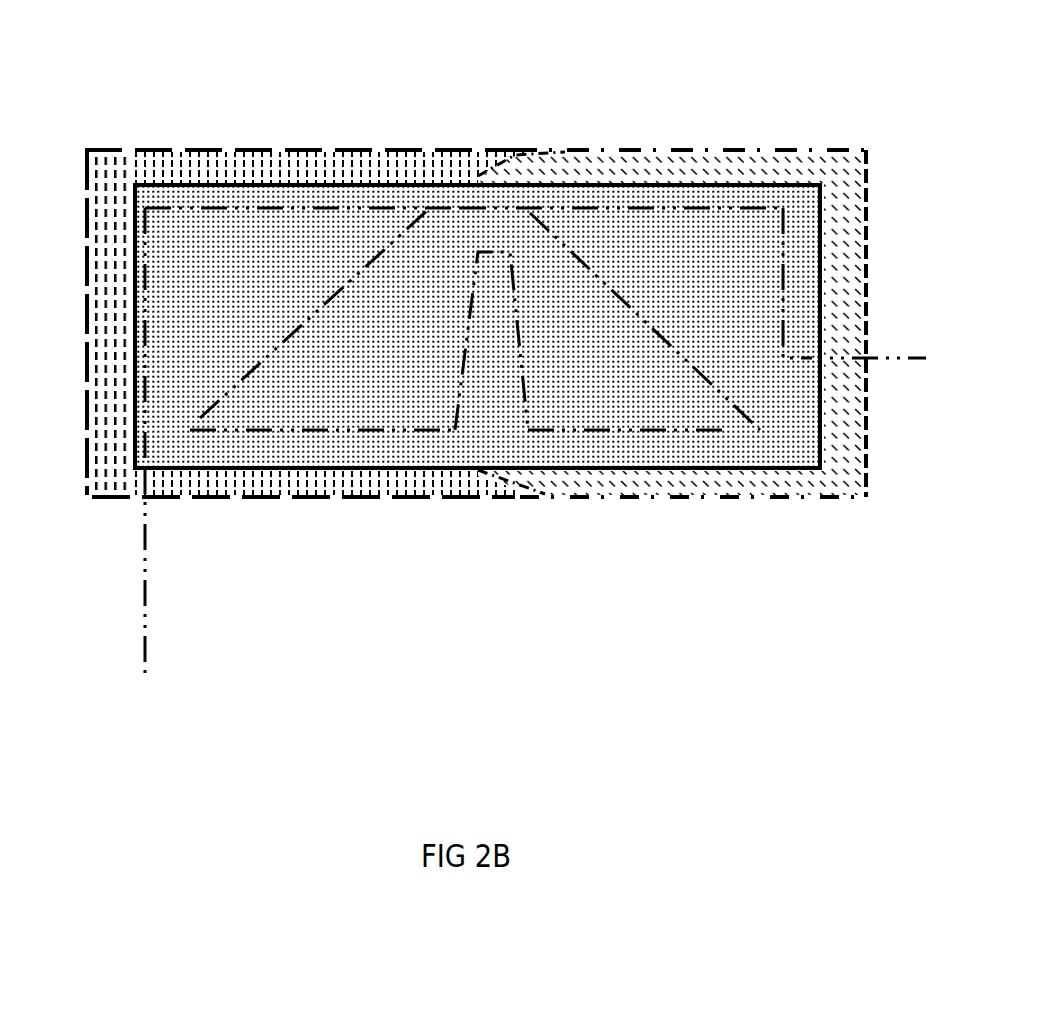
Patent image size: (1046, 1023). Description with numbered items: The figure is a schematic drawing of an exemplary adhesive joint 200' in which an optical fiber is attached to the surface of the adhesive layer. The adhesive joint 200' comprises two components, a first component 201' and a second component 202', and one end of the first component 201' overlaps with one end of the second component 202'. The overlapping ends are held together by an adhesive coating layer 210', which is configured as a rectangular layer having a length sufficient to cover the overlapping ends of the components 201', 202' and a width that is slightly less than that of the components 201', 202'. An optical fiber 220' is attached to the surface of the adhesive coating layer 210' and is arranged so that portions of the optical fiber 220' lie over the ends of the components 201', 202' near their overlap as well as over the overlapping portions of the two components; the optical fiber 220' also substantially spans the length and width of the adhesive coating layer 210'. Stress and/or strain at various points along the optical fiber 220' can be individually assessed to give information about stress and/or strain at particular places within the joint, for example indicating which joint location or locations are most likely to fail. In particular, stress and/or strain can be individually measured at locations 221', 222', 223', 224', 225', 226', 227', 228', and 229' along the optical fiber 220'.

The adhesive joint 200' is at (501, 346).
The first component 201' is at (302, 272).
The second component 202' is at (684, 279).
The adhesive coating layer 210' is at (477, 411).
The optical fiber 220' is at (94, 571).
The location 221' is at (189, 407).
The location 222' is at (302, 134).
The location 223' is at (351, 391).
The location 224' is at (366, 530).
The location 225' is at (526, 250).
The location 226' is at (627, 530).
The location 227' is at (645, 232).
The location 228' is at (621, 134).
The location 229' is at (871, 283).